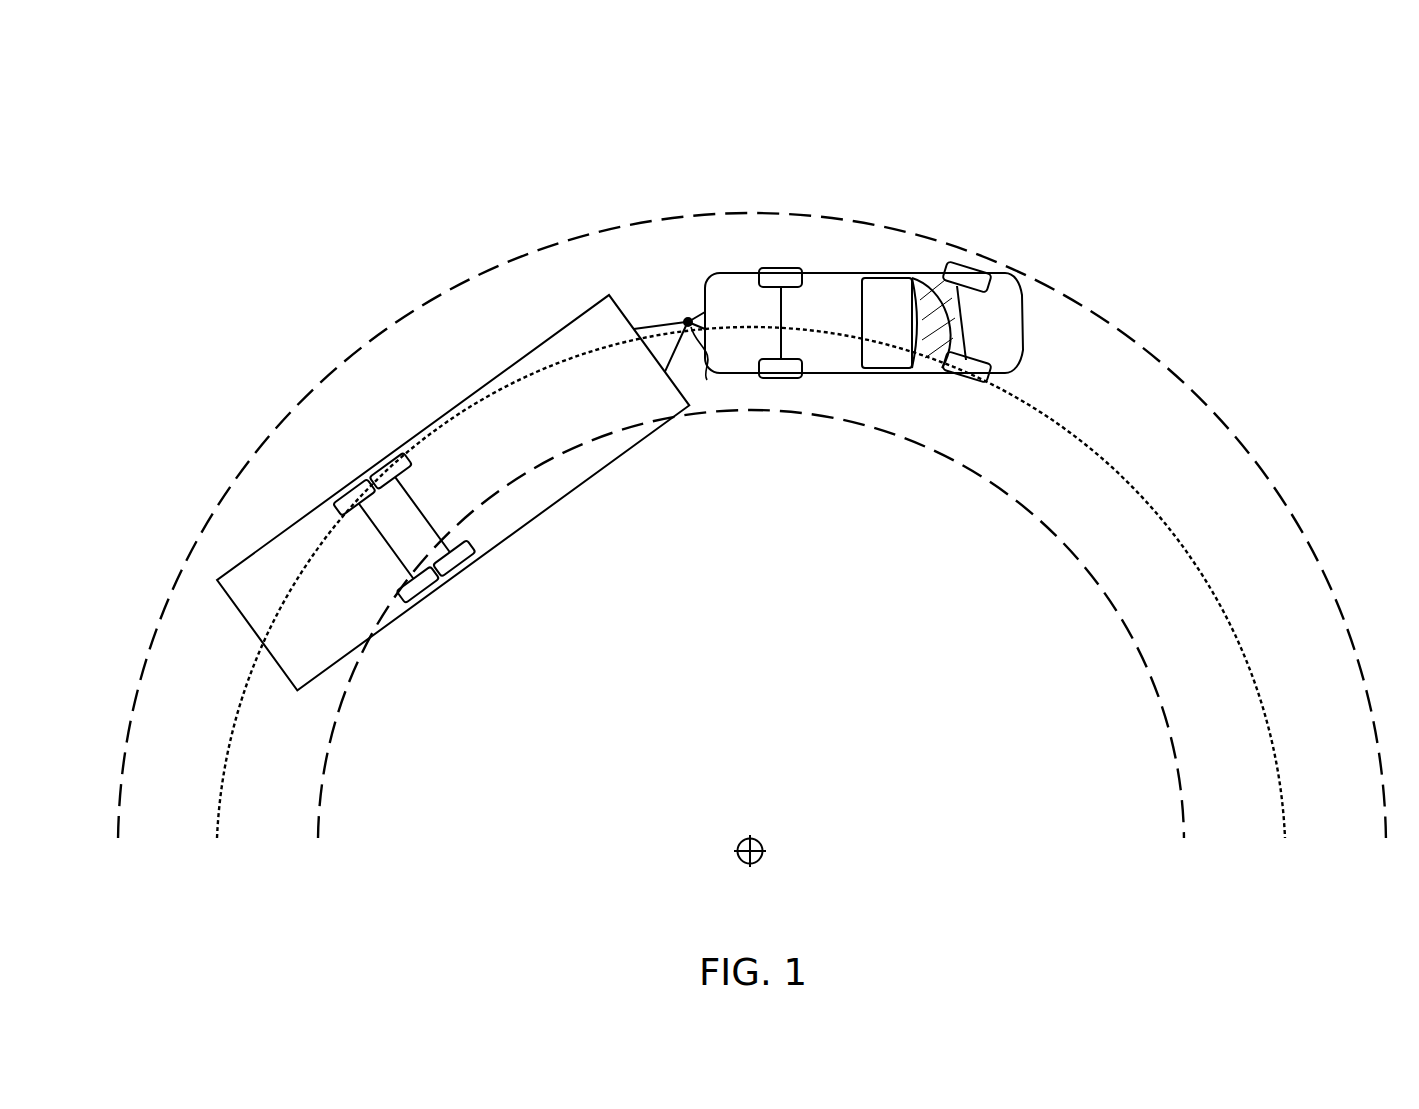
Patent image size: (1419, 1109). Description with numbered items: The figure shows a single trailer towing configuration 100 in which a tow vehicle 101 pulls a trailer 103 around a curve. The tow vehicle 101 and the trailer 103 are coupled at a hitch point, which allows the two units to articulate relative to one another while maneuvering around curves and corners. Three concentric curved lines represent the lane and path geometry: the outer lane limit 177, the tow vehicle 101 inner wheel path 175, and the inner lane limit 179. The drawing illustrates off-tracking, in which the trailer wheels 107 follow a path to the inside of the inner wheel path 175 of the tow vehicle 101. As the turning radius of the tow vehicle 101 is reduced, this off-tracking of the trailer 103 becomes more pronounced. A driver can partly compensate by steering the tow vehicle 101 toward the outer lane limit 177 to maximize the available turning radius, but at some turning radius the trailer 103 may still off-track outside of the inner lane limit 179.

The single trailer towing configuration 100 is at (1003, 133).
The tow vehicle 101 is at (833, 273).
The trailer 103 is at (506, 526).
The trailer wheels 107 is at (430, 600).
The inner wheel path 175 is at (1157, 512).
The outer lane limit 177 is at (1115, 325).
The inner lane limit 179 is at (1103, 592).